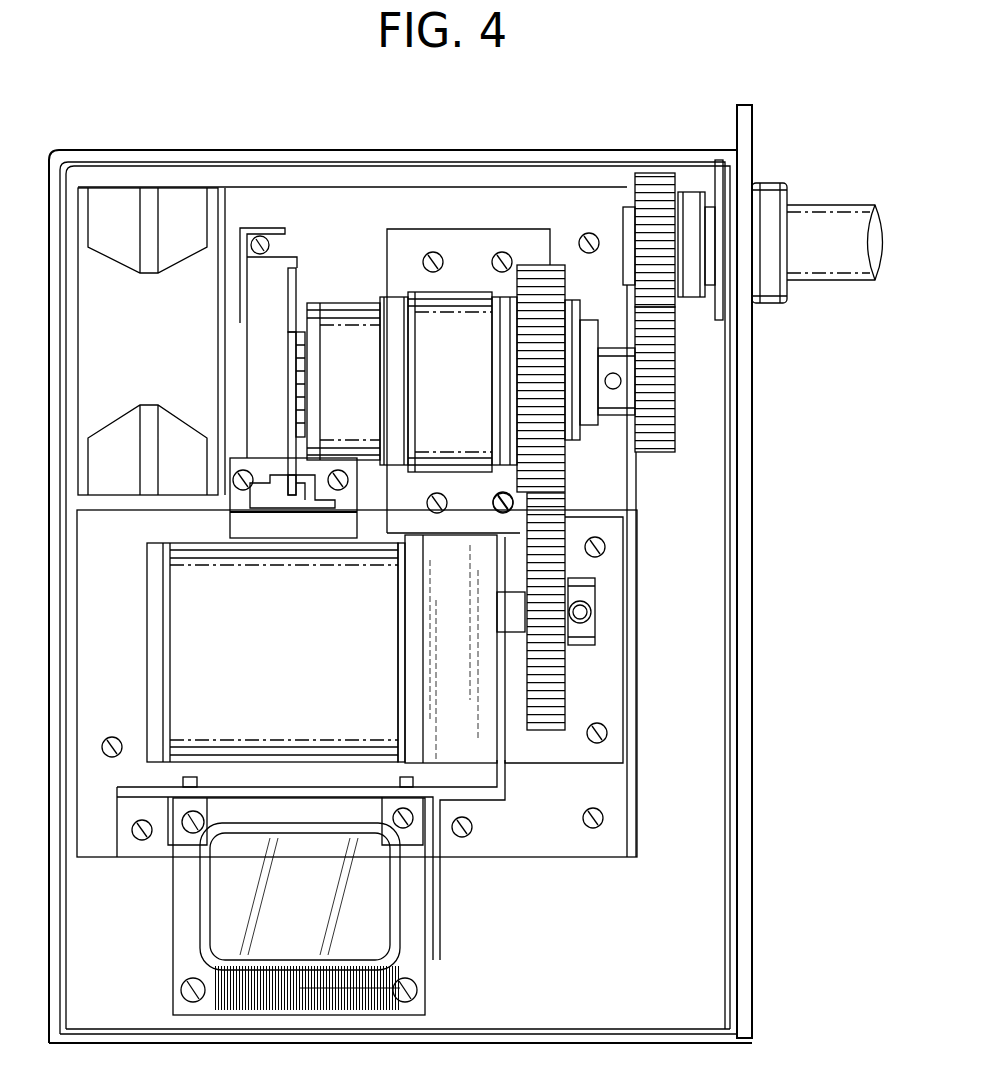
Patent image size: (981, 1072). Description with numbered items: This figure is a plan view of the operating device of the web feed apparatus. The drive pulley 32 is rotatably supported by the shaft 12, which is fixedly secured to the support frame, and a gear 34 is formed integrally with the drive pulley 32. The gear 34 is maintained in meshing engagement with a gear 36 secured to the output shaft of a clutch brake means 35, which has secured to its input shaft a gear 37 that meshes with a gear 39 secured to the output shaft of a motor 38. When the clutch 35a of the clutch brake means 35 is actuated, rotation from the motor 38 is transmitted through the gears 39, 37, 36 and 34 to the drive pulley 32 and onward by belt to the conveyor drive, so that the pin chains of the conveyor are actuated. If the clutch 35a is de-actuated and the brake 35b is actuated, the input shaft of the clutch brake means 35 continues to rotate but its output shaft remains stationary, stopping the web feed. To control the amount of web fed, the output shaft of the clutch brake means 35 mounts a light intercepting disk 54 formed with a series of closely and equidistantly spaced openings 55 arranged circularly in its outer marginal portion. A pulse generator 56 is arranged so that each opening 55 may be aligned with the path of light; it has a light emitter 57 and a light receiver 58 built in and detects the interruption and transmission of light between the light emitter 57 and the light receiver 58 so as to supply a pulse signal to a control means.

The shaft 12 is at (826, 222).
The drive pulley 32 is at (696, 192).
The gear 34 is at (658, 174).
The clutch brake means 35 is at (412, 291).
The clutch 35a is at (460, 283).
The brake 35b is at (380, 393).
The gear 36 is at (676, 378).
The gear 37 is at (568, 470).
The motor 38 is at (284, 685).
The gear 39 is at (565, 665).
The light intercepting disk 54 is at (290, 368).
The openings 55 is at (296, 283).
The pulse generator 56 is at (283, 517).
The light emitter 57 is at (308, 480).
The light receiver 58 is at (286, 480).